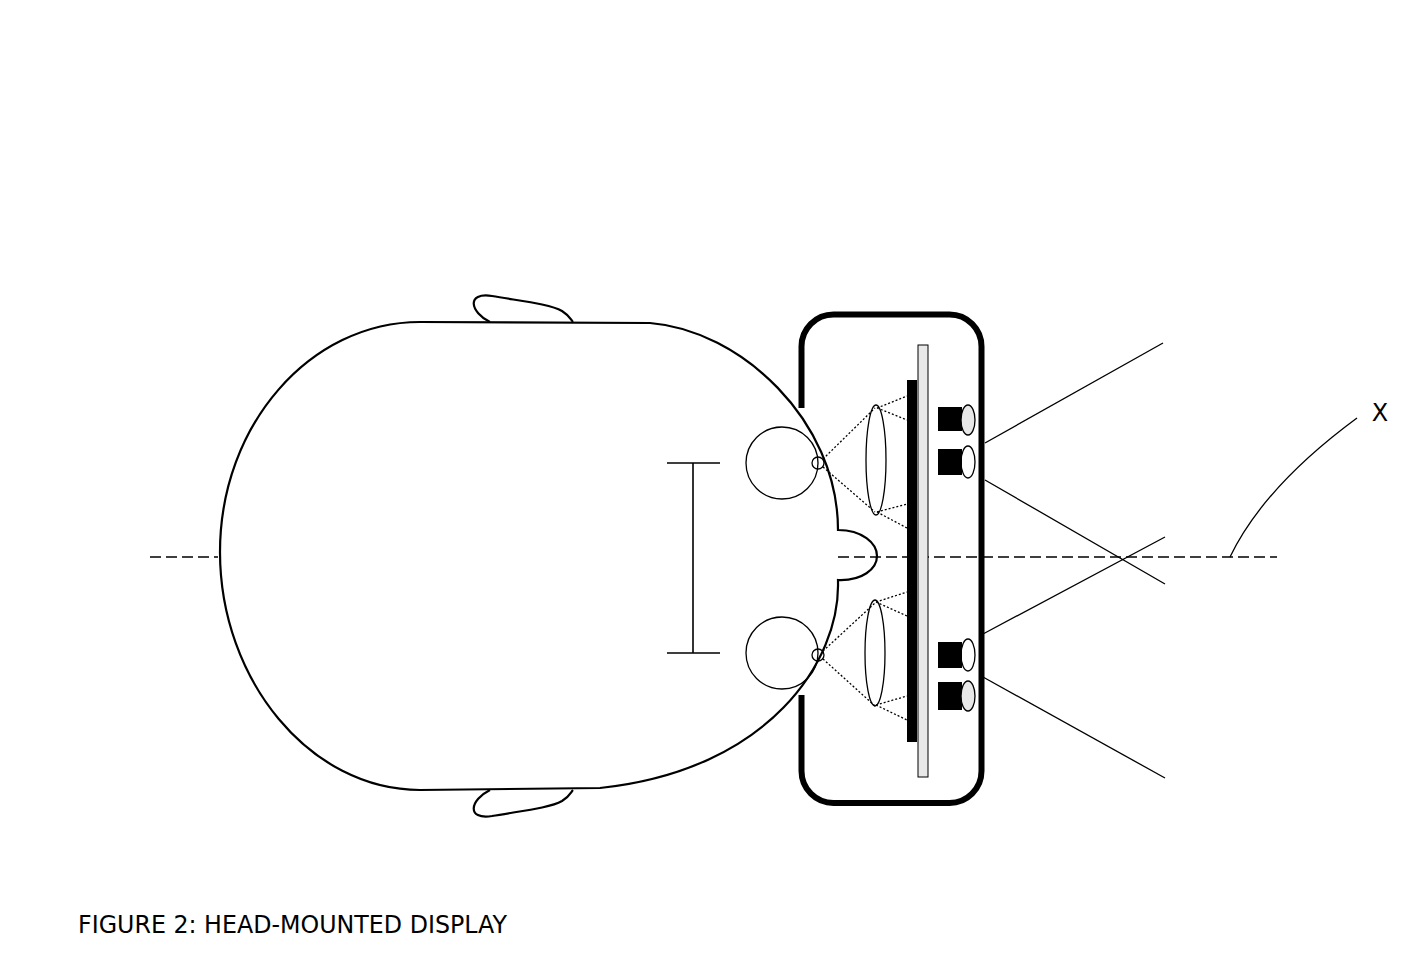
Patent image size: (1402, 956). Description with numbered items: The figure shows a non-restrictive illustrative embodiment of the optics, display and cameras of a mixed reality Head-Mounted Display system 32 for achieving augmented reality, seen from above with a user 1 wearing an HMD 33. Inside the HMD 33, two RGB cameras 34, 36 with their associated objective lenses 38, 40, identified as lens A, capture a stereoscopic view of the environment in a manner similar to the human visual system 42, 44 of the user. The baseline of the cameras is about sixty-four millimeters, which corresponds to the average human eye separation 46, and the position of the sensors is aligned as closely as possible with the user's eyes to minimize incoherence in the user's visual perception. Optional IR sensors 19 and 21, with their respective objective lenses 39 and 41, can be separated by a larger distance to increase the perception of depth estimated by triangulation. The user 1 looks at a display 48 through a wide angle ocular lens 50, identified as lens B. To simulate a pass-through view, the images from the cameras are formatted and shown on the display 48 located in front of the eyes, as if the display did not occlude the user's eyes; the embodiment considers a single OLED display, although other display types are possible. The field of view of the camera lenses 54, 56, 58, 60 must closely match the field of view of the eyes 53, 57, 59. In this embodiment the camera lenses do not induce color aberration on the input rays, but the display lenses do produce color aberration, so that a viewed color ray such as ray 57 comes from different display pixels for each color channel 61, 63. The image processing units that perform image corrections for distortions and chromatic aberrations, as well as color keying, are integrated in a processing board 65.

The user 1 is at (390, 450).
The IR sensor 19 is at (956, 405).
The IR sensor 21 is at (982, 768).
The Head-Mounted Display system 32 is at (1021, 59).
The HMD 33 is at (855, 312).
The RGB camera 34 is at (968, 480).
The RGB camera 36 is at (984, 596).
The objective lens 38 is at (980, 447).
The objective lens 39 is at (975, 402).
The objective lens 40 is at (984, 686).
The objective lens 41 is at (983, 694).
The human visual system 42 is at (780, 458).
The human visual system 44 is at (782, 652).
The average human eye separation 46 is at (690, 535).
The display 48 is at (926, 345).
The wide angle ocular lens 50 is at (912, 380).
The field of view of the eyes 53 is at (838, 448).
The field of view of the camera lenses 54 is at (1117, 363).
The field of view of the camera lenses 56 is at (878, 404).
The ray 57 is at (856, 688).
The field of view of the camera lenses 58 is at (1087, 585).
The field of view of the eyes 59 is at (815, 663).
The field of view of the camera lenses 60 is at (1117, 753).
The display pixel for color channel 61 is at (950, 708).
The display pixel for color channel 63 is at (921, 745).
The processing board 65 is at (940, 406).